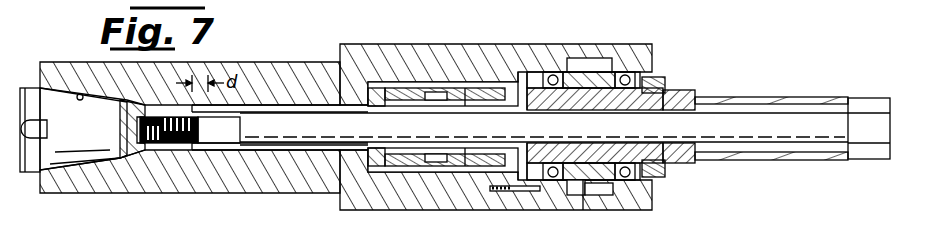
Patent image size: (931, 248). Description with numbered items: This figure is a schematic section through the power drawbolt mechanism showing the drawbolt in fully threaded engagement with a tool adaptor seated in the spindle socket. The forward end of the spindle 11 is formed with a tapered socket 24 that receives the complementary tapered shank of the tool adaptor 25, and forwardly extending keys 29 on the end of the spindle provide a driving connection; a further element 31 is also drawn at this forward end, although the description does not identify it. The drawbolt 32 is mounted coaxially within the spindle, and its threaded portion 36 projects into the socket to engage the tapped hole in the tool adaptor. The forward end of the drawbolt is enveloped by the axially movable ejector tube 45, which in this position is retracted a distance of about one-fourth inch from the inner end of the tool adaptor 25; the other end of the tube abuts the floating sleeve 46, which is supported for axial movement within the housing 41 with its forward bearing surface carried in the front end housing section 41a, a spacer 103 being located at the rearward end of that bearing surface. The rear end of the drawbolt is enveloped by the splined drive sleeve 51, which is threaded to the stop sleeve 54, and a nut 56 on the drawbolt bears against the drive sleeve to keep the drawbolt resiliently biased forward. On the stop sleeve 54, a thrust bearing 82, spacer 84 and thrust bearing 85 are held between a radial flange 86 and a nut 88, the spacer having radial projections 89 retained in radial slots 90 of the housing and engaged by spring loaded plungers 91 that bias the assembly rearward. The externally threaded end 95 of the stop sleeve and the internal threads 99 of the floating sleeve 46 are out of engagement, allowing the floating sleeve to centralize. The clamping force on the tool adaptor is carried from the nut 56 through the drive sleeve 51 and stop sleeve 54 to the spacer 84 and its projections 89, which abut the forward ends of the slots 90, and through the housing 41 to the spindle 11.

The spindle 11 is at (240, 190).
The tapered socket 24 is at (81, 94).
The tool adaptor 25 is at (128, 153).
The keys 29 is at (49, 130).
The spring 31 is at (150, 146).
The drawbolt 32 is at (310, 142).
The threaded portion 36 is at (187, 147).
The housing 41 is at (483, 54).
The front end housing section 41a is at (397, 95).
The ejector tube 45 is at (268, 110).
The floating sleeve 46 is at (405, 96).
The drive sleeve 51 is at (788, 82).
The stop sleeve 54 is at (519, 110).
The nut 56 is at (870, 106).
The thrust bearing 82 is at (553, 76).
The spacer 84 is at (590, 71).
The thrust bearing 85 is at (655, 75).
The radial flange 86 is at (527, 72).
The nut 88 is at (668, 82).
The radial projections 89 is at (577, 193).
The radial slot 90 is at (603, 191).
The spring loaded plungers 91 is at (547, 188).
The externally threaded end 95 is at (440, 94).
The internal threads 99 is at (477, 102).
The spacer 103 is at (385, 100).